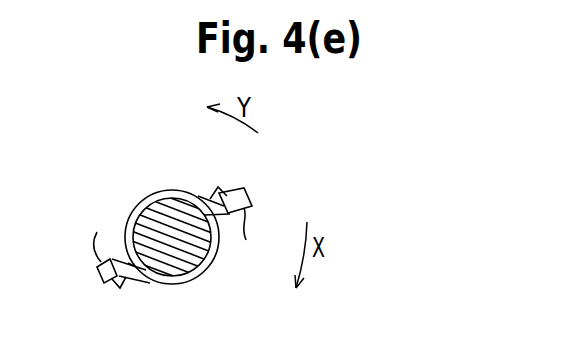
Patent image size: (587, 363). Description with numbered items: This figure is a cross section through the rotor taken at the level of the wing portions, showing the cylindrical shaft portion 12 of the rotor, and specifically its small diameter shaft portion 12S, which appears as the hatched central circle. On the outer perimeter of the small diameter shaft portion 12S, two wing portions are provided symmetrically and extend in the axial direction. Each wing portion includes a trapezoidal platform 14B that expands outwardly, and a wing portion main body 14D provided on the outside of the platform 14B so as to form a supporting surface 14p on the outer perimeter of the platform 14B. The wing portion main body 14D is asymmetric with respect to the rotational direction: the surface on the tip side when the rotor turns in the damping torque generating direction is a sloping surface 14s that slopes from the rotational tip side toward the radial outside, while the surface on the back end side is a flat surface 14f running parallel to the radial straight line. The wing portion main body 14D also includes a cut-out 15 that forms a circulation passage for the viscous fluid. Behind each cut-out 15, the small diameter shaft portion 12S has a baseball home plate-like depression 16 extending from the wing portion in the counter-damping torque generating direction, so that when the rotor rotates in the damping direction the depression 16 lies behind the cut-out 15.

The shaft portion 12 is at (202, 276).
The small diameter shaft portion 12S is at (213, 262).
The platform 14B is at (203, 202).
The wing portion main body 14D is at (240, 200).
The cut-out 15 is at (190, 229).
The flat surface 14f is at (212, 197).
The supporting surface 14p is at (130, 265).
The sloping surface 14s is at (243, 212).
The depression 16 is at (147, 207).